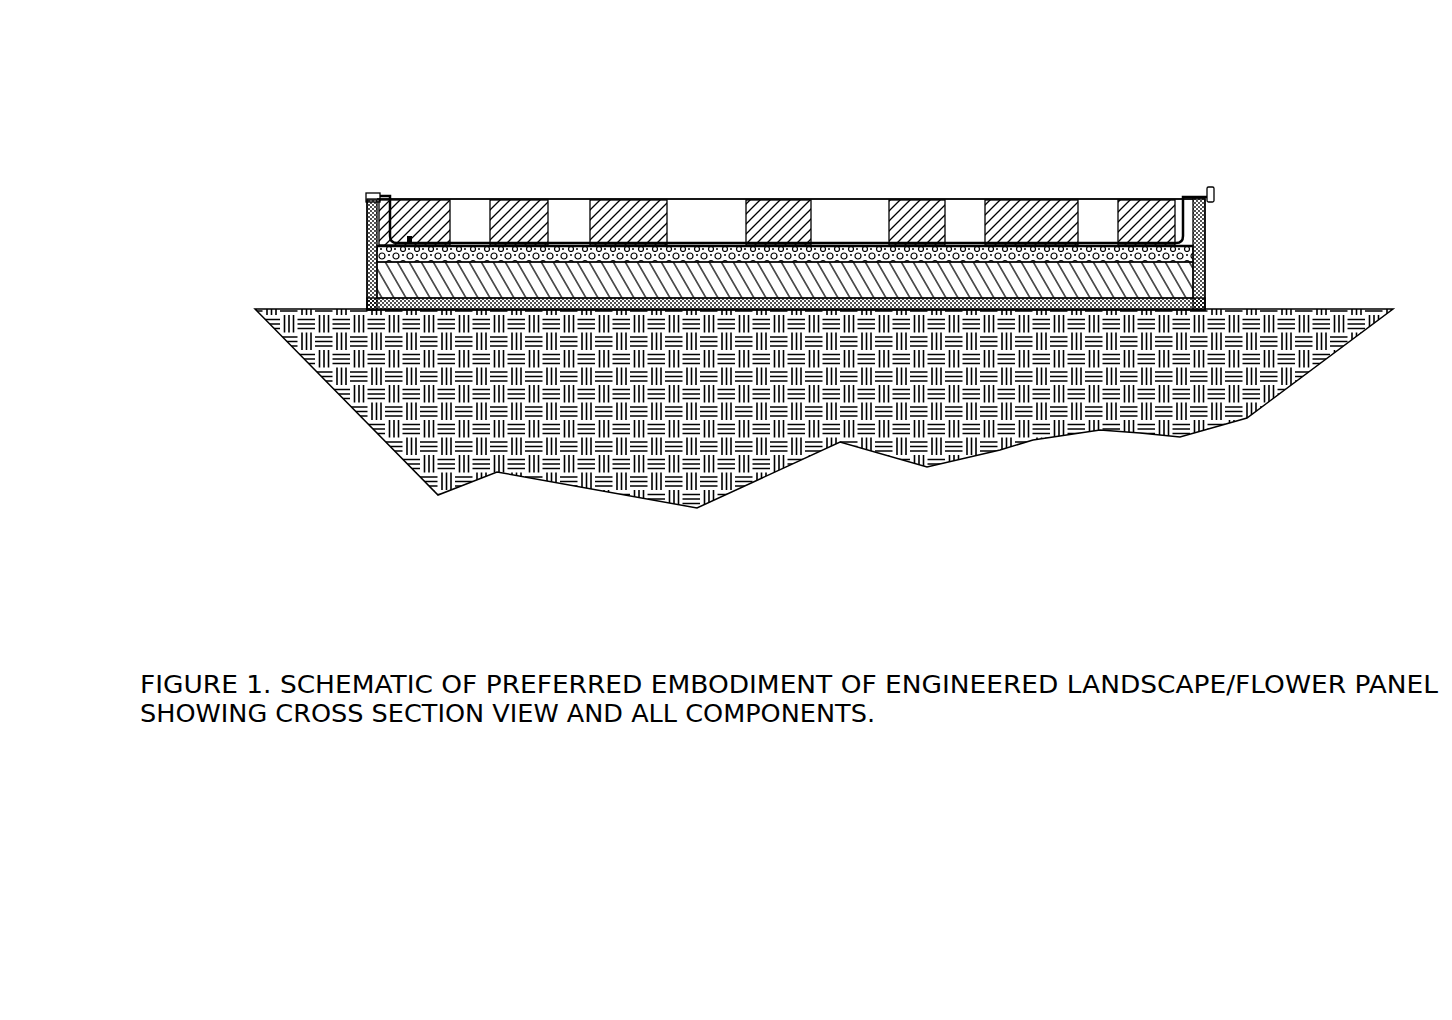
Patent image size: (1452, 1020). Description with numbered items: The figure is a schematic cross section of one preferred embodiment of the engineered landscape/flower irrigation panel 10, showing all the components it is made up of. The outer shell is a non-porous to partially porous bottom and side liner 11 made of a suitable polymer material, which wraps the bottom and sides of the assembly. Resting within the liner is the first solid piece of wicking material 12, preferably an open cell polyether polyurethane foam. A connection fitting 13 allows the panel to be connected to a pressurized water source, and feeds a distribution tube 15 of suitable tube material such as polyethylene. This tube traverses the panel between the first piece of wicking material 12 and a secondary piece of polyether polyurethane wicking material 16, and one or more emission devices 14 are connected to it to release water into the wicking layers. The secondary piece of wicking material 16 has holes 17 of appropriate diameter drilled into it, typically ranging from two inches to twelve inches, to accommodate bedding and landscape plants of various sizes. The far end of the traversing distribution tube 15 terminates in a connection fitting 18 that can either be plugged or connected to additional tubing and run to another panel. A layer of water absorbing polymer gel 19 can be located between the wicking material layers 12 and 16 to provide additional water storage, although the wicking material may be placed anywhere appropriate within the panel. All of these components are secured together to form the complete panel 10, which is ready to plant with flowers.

The landscape/flower irrigation panel 10 is at (343, 223).
The bottom and side liner 11 is at (302, 353).
The first solid piece of wicking material 12 is at (1208, 265).
The connection fitting 13 is at (373, 193).
The emission devices 14 is at (430, 205).
The distribution tube 15 is at (780, 230).
The secondary piece of polyether polyurethane wicking material 16 is at (920, 220).
The holes 17 is at (712, 223).
The connection fitting 18 is at (1211, 187).
The layer of water absorbing polymer gel 19 is at (370, 247).